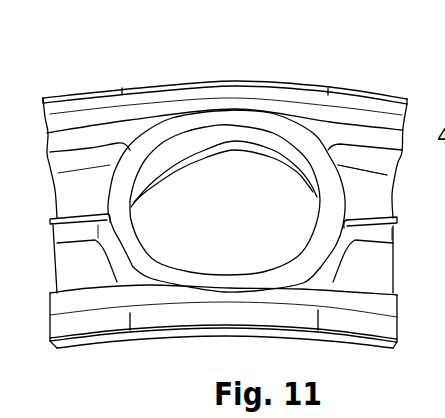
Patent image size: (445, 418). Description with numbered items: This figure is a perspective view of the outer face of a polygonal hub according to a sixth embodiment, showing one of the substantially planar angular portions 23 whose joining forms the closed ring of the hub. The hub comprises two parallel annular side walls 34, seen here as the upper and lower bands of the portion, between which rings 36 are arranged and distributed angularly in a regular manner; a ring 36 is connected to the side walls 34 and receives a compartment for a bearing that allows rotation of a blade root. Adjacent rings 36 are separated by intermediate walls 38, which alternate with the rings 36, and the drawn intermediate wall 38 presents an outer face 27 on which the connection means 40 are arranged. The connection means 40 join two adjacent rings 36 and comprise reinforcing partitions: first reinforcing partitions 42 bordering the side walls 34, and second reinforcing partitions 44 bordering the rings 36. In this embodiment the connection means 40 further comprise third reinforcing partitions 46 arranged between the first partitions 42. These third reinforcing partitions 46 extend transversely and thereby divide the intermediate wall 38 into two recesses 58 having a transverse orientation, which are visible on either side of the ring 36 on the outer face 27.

The angular portion 23 is at (100, 80).
The outer face 27 is at (365, 297).
The annular side wall 34 is at (255, 83).
The ring 36 is at (276, 137).
The intermediate wall 38 is at (395, 138).
The connection means 40 is at (133, 126).
The first reinforcing partition 42 is at (83, 135).
The second reinforcing partition 44 is at (126, 234).
The third reinforcing partition 46 is at (78, 218).
The recess 58 is at (380, 192).